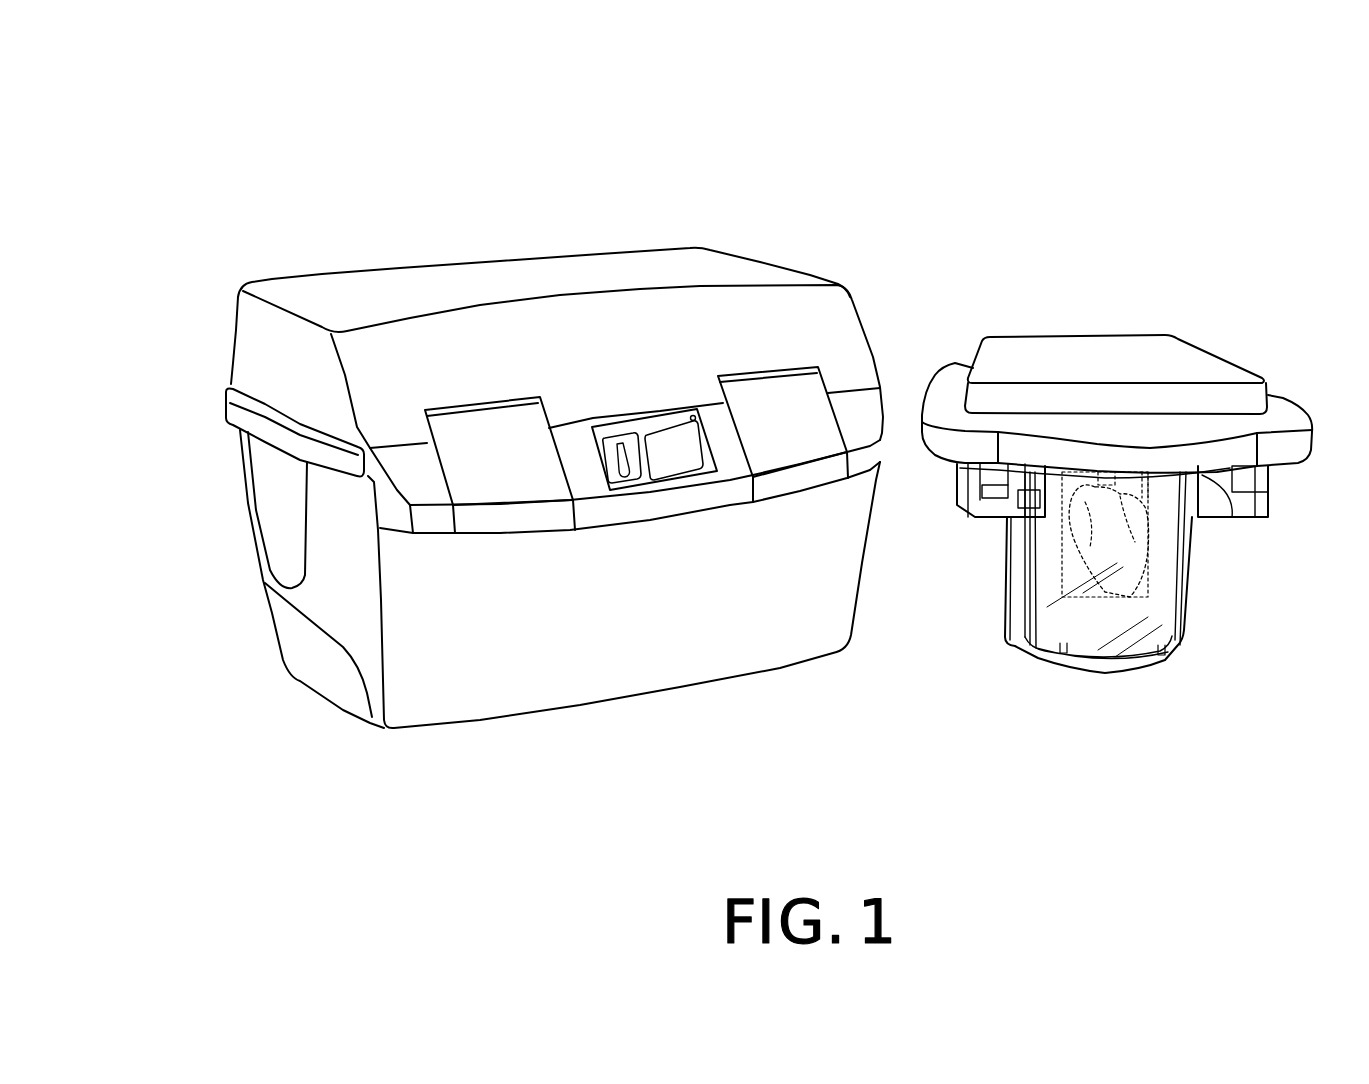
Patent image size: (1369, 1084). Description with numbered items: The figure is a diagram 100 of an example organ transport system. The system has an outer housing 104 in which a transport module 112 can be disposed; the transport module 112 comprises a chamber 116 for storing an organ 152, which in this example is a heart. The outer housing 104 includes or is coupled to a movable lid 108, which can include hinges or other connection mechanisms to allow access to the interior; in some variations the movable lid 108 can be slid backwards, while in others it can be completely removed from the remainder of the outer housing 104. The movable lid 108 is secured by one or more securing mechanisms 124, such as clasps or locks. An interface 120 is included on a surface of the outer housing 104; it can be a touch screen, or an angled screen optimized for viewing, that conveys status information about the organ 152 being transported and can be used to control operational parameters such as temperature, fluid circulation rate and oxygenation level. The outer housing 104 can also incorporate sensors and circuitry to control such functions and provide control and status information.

The diagram 100 is at (153, 122).
The outer housing 104 is at (292, 670).
The movable lid 108 is at (863, 323).
The transport module 112 is at (1220, 357).
The chamber 116 is at (1125, 628).
The interface 120 is at (660, 483).
The securing mechanisms 124 is at (510, 537).
The organ 152 is at (1150, 555).